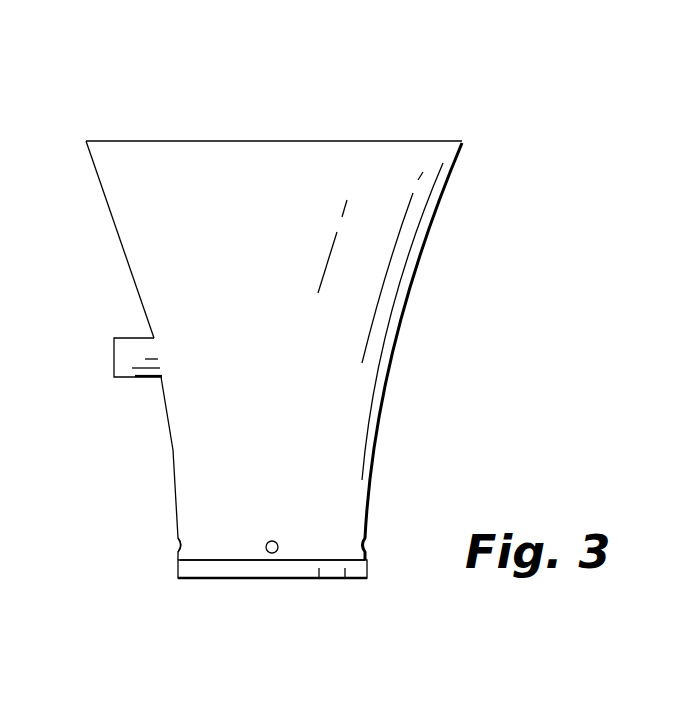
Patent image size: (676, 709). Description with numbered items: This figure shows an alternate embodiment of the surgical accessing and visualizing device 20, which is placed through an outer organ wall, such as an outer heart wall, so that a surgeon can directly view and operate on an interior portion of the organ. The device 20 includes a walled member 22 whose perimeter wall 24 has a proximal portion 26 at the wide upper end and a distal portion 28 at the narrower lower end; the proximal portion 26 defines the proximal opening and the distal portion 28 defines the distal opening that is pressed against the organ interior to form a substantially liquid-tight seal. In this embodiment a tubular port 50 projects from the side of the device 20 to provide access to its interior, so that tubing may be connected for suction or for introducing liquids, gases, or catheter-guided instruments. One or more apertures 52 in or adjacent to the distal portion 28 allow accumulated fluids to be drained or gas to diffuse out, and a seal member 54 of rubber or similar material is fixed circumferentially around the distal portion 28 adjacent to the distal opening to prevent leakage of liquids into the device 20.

The surgical accessing and visualizing device 20 is at (315, 359).
The walled member 22 is at (415, 274).
The perimeter wall 24 is at (137, 227).
The proximal portion 26 is at (248, 152).
The distal portion 28 is at (220, 530).
The port 50 is at (135, 378).
The apertures 52 is at (274, 540).
The seal member 54 is at (303, 578).